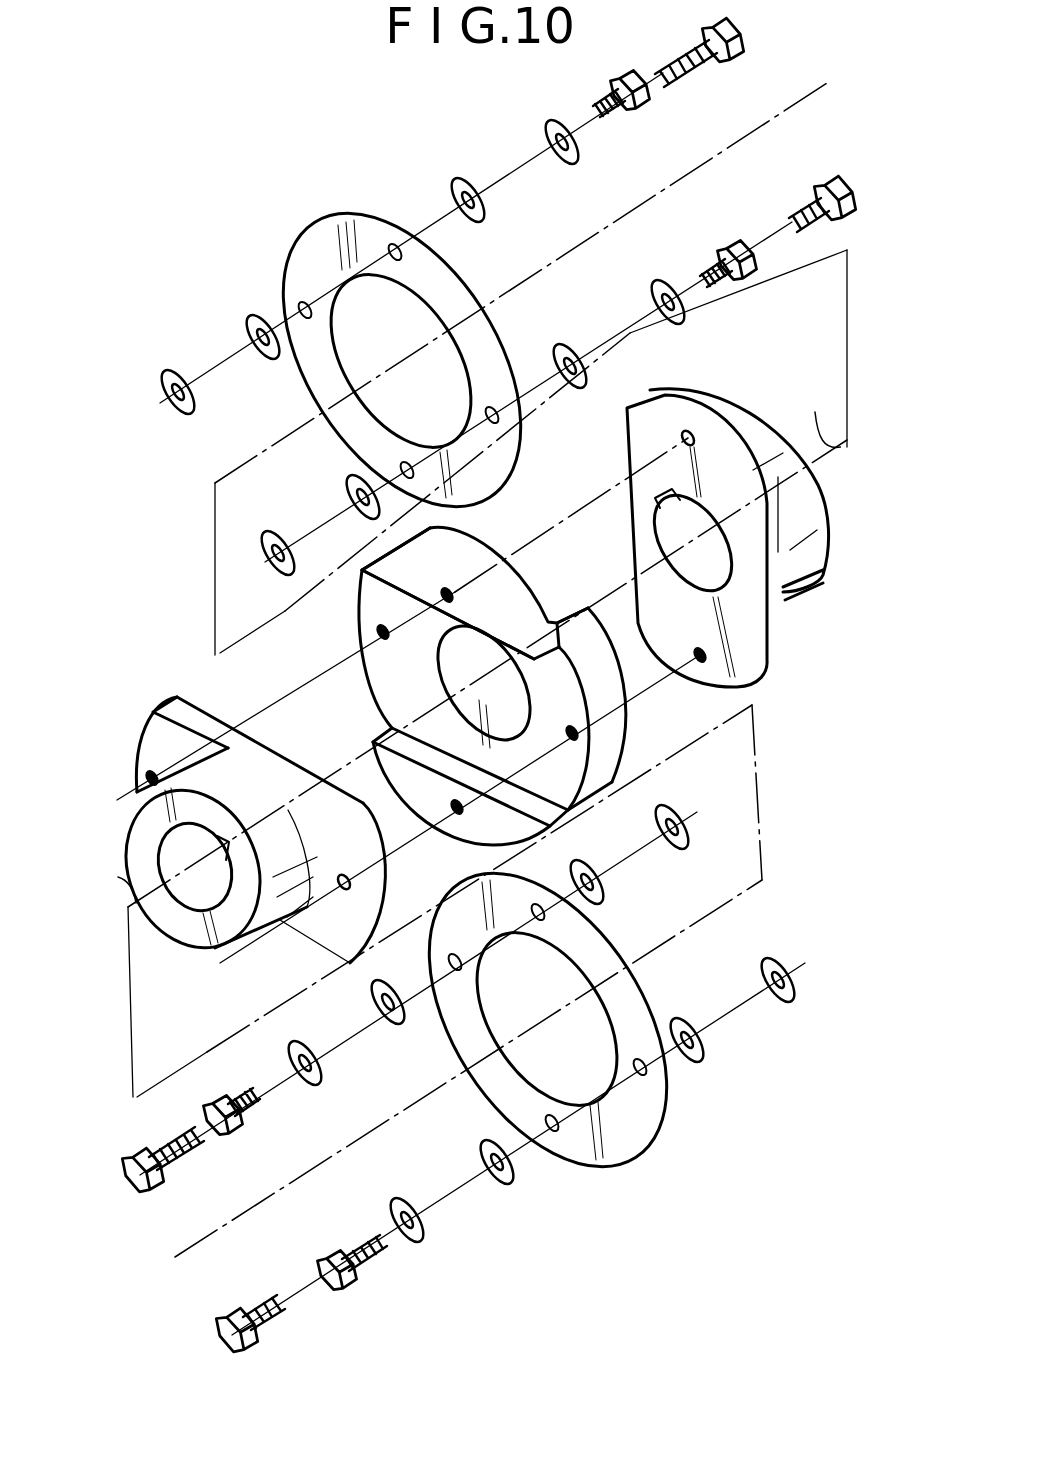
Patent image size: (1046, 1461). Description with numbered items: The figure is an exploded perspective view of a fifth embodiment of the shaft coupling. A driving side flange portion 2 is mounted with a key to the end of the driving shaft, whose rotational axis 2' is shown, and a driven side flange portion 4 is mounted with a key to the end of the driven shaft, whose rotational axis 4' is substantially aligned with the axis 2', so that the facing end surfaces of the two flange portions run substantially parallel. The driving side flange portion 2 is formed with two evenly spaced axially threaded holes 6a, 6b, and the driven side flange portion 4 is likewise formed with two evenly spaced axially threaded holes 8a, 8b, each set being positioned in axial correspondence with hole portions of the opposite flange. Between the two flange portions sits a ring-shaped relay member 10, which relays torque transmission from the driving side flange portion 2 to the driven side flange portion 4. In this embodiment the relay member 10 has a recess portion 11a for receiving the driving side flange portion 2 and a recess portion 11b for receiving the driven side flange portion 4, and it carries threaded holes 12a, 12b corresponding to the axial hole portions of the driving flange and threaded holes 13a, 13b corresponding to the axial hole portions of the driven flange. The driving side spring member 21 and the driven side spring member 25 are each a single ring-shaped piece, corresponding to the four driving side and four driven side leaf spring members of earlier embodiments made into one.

The driving side flange portion 2 is at (243, 833).
The rotational axis of the driving shaft 2' is at (111, 881).
The driven side flange portion 4 is at (728, 538).
The rotational axis of the driven shaft 4' is at (815, 415).
The axially threaded hole 6a is at (352, 881).
The axially threaded hole 6b is at (150, 775).
The axially threaded hole 8a is at (682, 440).
The axially threaded hole 8b is at (702, 652).
The relay member 10 is at (620, 720).
The recess portion 11a is at (370, 595).
The recess portion 11b is at (543, 598).
The threaded hole 12a is at (450, 588).
The threaded hole 12b is at (464, 812).
The threaded hole 13a is at (578, 740).
The threaded hole 13b is at (383, 640).
The driving side spring member 21 is at (612, 1148).
The driven side spring member 25 is at (372, 232).